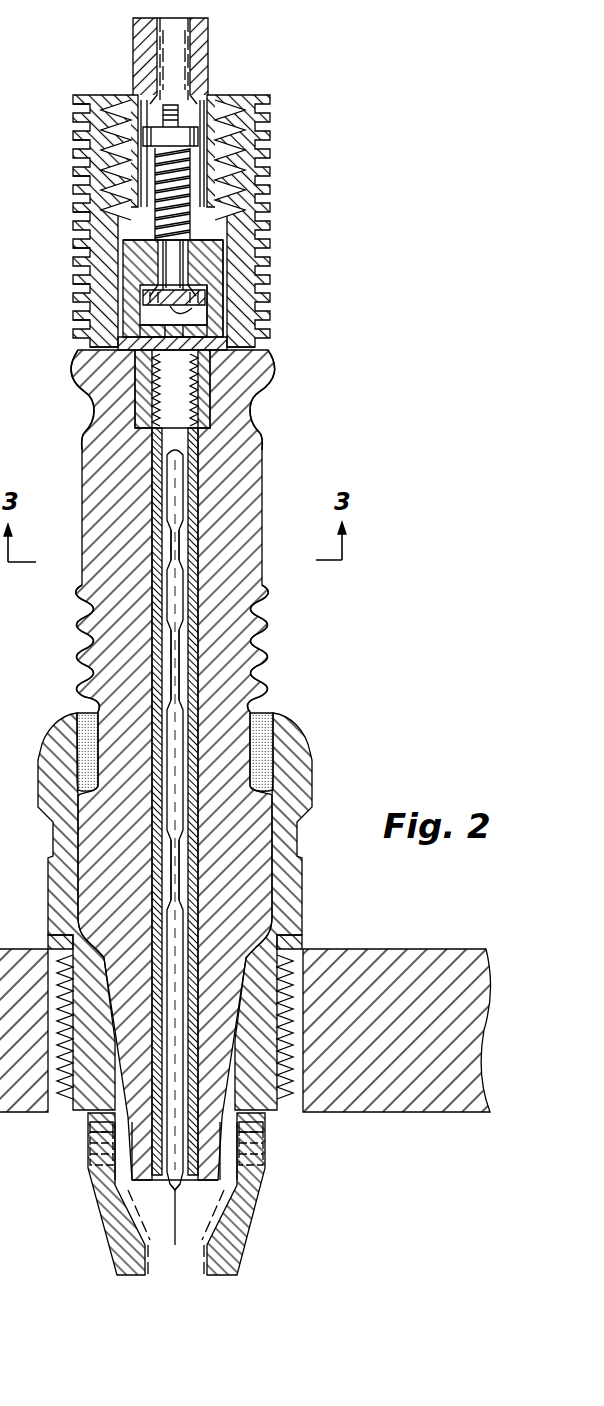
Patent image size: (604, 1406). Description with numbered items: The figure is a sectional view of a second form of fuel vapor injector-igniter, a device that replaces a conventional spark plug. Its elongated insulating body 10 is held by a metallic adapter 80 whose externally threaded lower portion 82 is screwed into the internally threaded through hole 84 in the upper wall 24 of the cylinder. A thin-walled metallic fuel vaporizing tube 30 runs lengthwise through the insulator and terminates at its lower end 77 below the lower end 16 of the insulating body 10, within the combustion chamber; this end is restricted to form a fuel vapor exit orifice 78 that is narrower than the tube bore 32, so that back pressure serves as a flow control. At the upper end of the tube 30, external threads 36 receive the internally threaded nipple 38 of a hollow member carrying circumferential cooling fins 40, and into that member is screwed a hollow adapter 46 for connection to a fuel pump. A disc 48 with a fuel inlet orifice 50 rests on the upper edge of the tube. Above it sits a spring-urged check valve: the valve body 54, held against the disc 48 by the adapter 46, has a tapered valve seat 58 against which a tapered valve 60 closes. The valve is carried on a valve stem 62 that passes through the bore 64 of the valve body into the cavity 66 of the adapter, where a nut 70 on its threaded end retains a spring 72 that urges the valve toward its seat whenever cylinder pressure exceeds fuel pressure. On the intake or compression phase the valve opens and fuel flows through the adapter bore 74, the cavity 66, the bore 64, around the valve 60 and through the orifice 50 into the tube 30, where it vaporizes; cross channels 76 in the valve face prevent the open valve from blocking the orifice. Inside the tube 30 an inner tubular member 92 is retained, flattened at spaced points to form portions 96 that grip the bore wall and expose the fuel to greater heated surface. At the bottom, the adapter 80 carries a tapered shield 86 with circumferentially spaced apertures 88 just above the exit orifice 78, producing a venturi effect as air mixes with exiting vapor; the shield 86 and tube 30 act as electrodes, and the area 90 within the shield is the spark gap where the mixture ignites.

The insulating body 10 is at (268, 453).
The lower free end of insulator 16 is at (142, 1130).
The cylinder wall or head 24 is at (364, 949).
The fuel vaporizing tube 30 is at (150, 604).
The tube bore 32 is at (185, 643).
The external threads of tube 36 is at (212, 383).
The internally threaded nipple 38 is at (150, 398).
The cooling fins 40 is at (74, 213).
The hollow adapter 46 is at (208, 36).
The orifice disc 48 is at (133, 333).
The fuel inlet orifice 50 is at (228, 339).
The valve body 54 is at (227, 282).
The tapered valve seat 58 is at (228, 252).
The tapered valve 60 is at (218, 307).
The valve stem 62 is at (162, 258).
The bore of valve body 64 is at (170, 264).
The cavity 66 is at (195, 113).
The nut 70 is at (160, 131).
The spring 72 is at (188, 163).
The adapter bore 74 is at (172, 34).
The cross channels 76 is at (192, 306).
The lower end of fuel vaporizing tube 77 is at (185, 1188).
The fuel vapor exit orifice 78 is at (178, 1186).
The metallic adapter 80 is at (318, 771).
The externally threaded lower portion 82 is at (292, 1094).
The internally threaded through hole 84 is at (268, 1112).
The tapered shield or shroud 86 is at (258, 1202).
The ports or apertures 88 is at (258, 1150).
The spark gap area 90 is at (154, 1198).
The tubular member 92 is at (180, 656).
The flattened portions 96 is at (177, 584).